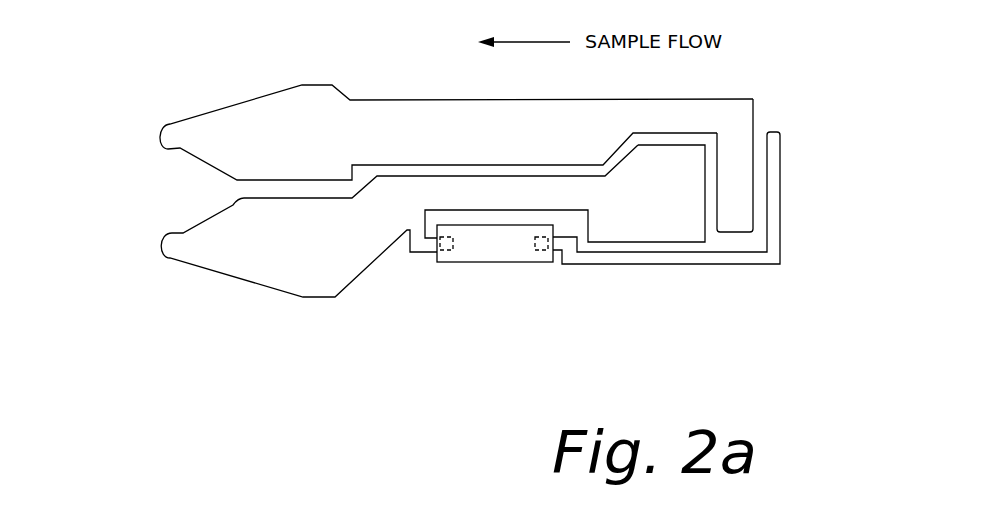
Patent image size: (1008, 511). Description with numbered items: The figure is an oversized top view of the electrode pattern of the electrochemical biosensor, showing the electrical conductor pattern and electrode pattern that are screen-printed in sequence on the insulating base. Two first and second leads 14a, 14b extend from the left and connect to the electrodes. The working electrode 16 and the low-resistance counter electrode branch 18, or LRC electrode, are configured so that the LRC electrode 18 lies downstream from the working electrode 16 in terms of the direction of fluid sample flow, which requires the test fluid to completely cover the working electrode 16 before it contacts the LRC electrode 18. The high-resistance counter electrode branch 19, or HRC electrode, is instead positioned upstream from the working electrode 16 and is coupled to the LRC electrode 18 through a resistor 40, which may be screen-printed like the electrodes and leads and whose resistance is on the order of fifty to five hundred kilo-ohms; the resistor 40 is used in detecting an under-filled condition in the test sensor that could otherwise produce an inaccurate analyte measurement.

The first lead 14a is at (165, 137).
The second lead 14b is at (165, 247).
The working electrode 16 is at (740, 147).
The low-resistance counter electrode branch 18 is at (661, 206).
The high-resistance counter electrode branch 19 is at (773, 160).
The resistor 40 is at (490, 262).